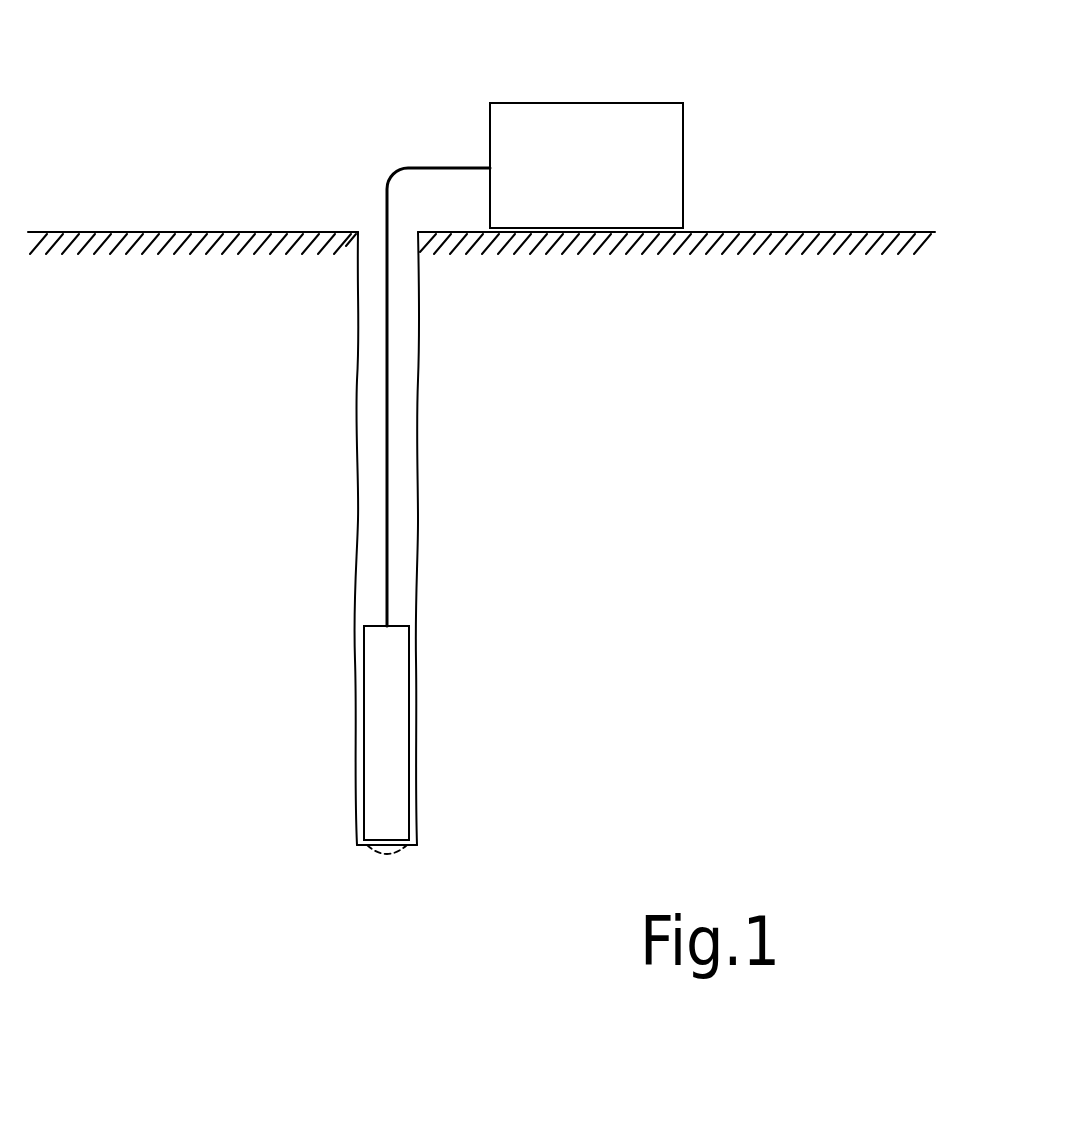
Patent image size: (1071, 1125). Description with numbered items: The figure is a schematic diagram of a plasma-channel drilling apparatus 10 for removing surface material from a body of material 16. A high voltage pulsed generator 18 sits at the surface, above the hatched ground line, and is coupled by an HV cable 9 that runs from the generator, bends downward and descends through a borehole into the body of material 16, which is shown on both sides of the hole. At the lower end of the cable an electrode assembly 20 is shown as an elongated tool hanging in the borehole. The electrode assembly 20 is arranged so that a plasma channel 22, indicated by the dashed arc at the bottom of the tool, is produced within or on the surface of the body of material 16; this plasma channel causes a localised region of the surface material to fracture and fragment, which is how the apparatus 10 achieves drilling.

The plasma-channel drilling apparatus 10 is at (407, 100).
The HV cable 9 is at (387, 393).
The body of material 16 is at (193, 560).
The high voltage pulsed generator 18 is at (605, 181).
The electrode assembly 20 is at (390, 723).
The plasma channel 22 is at (372, 853).